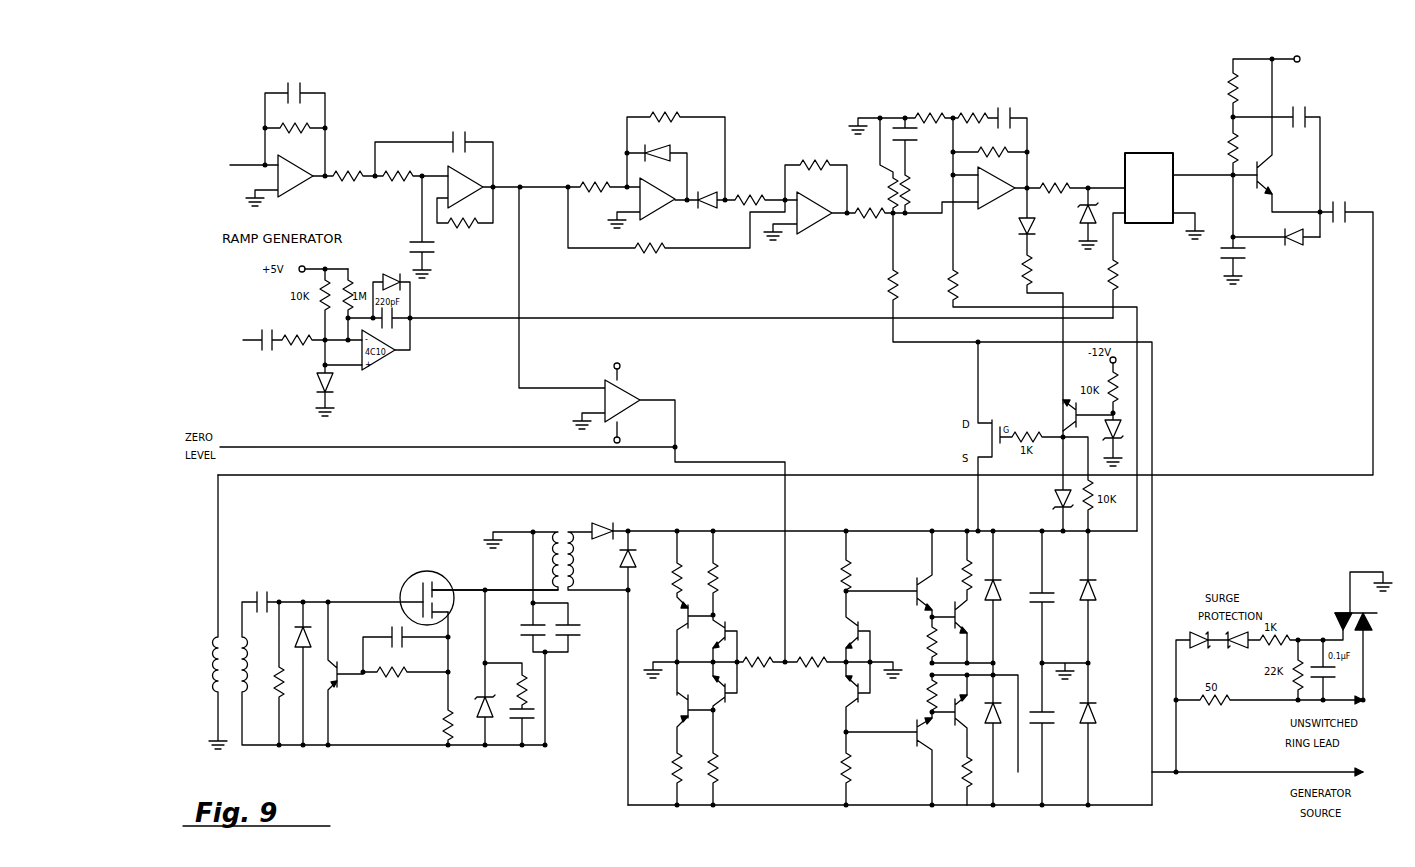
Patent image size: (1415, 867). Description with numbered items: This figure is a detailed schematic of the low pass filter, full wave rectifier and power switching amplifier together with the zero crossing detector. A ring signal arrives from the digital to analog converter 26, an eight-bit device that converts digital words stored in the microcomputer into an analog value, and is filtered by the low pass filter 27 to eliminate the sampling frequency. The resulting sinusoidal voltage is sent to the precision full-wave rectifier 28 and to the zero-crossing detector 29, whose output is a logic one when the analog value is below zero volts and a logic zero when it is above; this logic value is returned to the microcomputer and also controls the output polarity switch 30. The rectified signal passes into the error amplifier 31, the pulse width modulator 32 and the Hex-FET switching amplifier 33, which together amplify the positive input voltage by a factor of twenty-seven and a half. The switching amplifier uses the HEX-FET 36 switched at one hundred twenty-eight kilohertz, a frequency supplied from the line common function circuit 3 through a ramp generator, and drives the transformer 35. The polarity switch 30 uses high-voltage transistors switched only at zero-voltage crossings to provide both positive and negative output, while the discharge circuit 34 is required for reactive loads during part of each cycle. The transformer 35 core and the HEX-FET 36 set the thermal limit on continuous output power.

The low pass filter 27 is at (384, 161).
The digital to analog converter 26 is at (224, 169).
The line common function circuit 3 is at (261, 368).
The precision full-wave rectifier 28 is at (685, 161).
The error amplifier 31 is at (999, 432).
The pulse width modulator 32 is at (795, 255).
The zero-crossing detector 29 is at (652, 424).
The transformer 35 is at (568, 527).
The HEX-FET 36 is at (479, 588).
The Hex-FET switching amplifier 33 is at (404, 634).
The polarity switch 30 is at (890, 679).
The discharge circuit 34 is at (1108, 628).